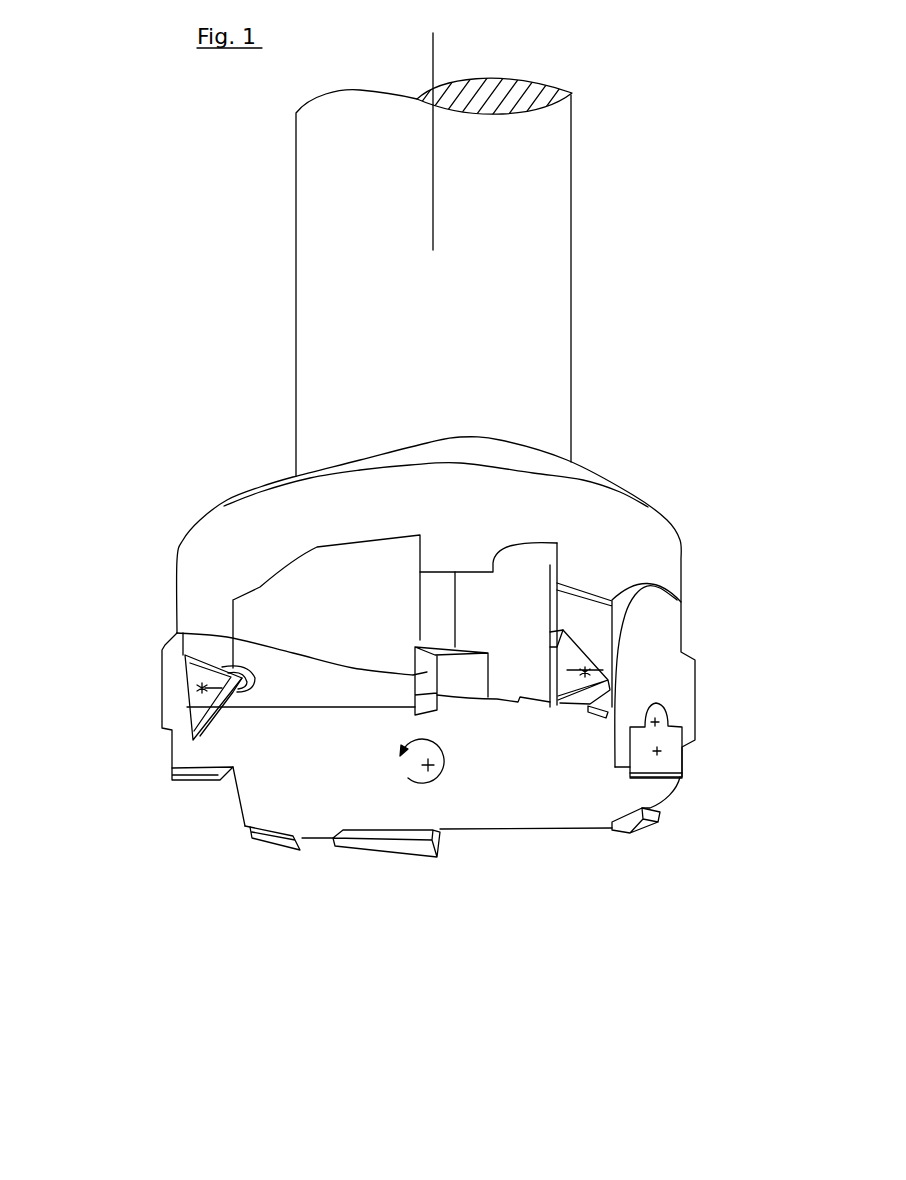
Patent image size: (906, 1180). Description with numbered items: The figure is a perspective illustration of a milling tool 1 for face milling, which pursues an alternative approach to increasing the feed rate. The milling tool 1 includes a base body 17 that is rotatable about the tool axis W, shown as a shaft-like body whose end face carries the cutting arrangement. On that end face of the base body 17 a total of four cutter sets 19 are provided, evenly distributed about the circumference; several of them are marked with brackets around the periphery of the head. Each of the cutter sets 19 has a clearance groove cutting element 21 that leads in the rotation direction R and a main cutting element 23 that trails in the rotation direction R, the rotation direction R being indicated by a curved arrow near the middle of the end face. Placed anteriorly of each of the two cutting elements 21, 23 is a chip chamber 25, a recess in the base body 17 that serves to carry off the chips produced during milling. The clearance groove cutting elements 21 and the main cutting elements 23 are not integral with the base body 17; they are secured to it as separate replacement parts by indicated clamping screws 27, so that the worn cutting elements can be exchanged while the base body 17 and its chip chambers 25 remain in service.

The milling tool 1 is at (620, 312).
The tool axis W is at (433, 58).
The base body 17 is at (647, 533).
The cutter sets 19 is at (88, 623).
The clearance groove cutting element 21 is at (197, 708).
The main cutting element 23 is at (177, 633).
The chip chamber 25 is at (350, 617).
The clamping screws 27 is at (567, 670).
The rotation direction R is at (418, 787).